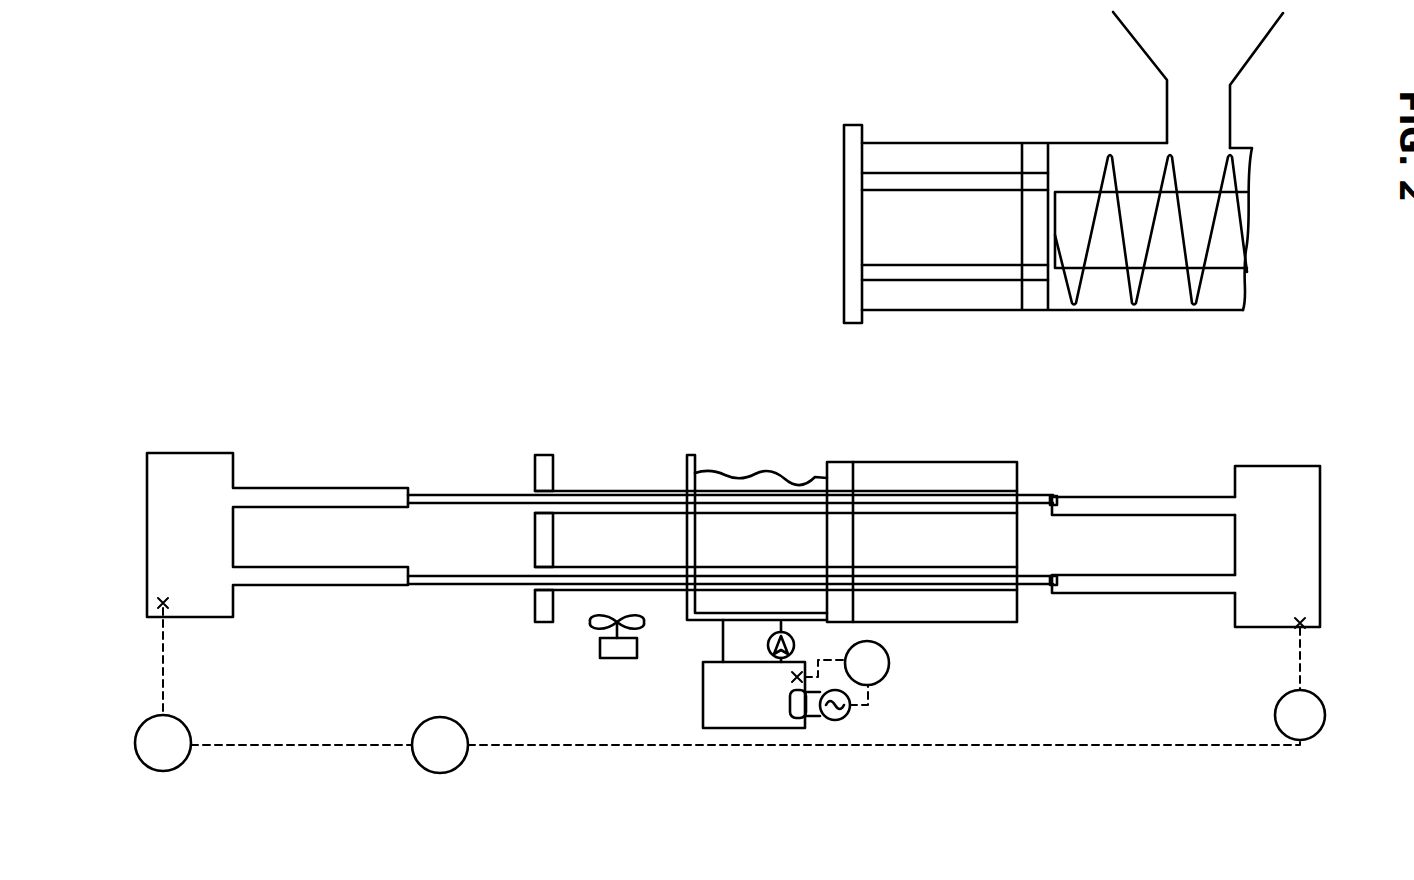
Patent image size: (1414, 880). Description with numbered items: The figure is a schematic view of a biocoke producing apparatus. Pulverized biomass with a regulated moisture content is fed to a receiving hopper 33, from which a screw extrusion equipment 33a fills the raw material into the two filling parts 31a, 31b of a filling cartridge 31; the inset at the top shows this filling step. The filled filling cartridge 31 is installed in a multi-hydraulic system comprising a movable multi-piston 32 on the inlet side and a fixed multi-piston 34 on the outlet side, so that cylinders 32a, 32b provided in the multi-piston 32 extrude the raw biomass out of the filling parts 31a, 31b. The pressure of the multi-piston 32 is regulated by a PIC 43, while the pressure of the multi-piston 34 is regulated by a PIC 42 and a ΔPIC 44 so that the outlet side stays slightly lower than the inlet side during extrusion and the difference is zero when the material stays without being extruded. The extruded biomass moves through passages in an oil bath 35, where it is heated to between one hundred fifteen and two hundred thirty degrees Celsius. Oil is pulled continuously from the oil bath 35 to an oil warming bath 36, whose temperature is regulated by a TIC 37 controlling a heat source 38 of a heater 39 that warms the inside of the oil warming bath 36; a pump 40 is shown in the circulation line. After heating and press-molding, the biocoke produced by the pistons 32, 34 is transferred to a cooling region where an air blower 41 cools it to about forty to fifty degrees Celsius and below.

The filling cartridge 31 is at (927, 158).
The filling part 31a is at (981, 183).
The filling part 31b is at (961, 272).
The multi-piston 32 is at (1270, 480).
The cylinder 32a is at (1130, 500).
The cylinder 32b is at (1137, 590).
The receiving hopper 33 is at (1135, 33).
The screw extrusion equipment 33a is at (1127, 200).
The multi-piston 34 is at (193, 475).
The oil bath 35 is at (760, 478).
The oil warming bath 36 is at (703, 700).
The TIC 37 is at (890, 667).
The heat source 38 is at (852, 717).
The heater 39 is at (790, 702).
The pump 40 is at (795, 644).
The air blower 41 is at (598, 650).
The PIC 42 is at (163, 771).
The PIC 43 is at (1275, 715).
The ΔPIC 44 is at (440, 773).